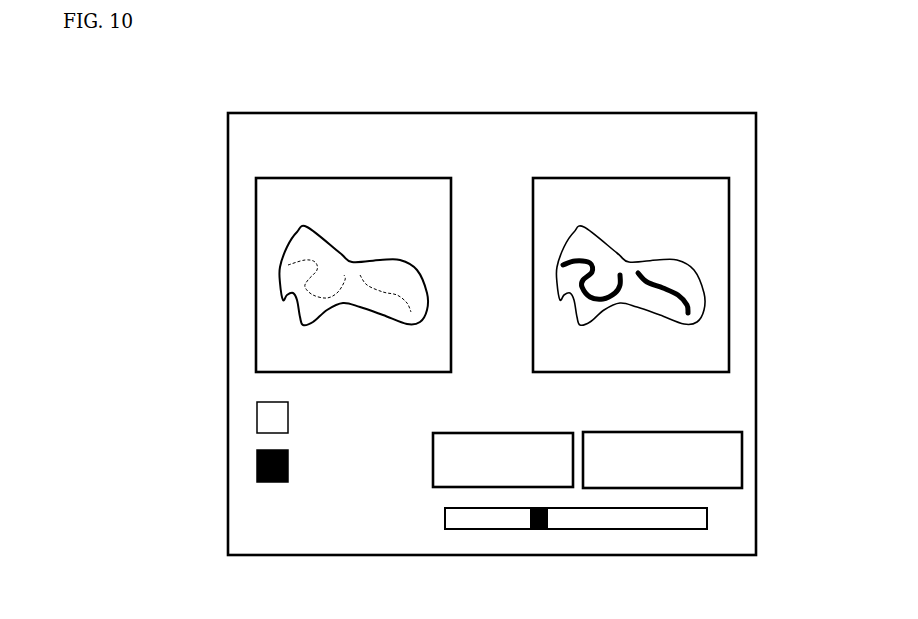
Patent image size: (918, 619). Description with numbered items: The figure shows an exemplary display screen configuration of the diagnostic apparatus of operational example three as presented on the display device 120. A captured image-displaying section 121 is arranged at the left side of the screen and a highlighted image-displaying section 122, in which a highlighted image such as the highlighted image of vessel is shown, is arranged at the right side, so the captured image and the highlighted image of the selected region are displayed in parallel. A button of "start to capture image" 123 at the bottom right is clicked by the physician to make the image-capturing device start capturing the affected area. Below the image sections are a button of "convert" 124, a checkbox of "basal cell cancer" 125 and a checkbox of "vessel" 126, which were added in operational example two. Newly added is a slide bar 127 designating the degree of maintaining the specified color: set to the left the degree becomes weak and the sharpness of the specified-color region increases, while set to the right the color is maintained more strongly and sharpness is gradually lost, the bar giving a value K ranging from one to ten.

The display device 120 is at (722, 113).
The captured image-displaying section 121 is at (417, 178).
The highlighted image-displaying section 122 is at (693, 178).
The button of "start to capture image" 123 is at (743, 450).
The button of "convert" 124 is at (533, 433).
The checkbox of "basal cell cancer" 125 is at (257, 413).
The checkbox of "vessel" 126 is at (257, 460).
The slide bar 127 is at (622, 530).